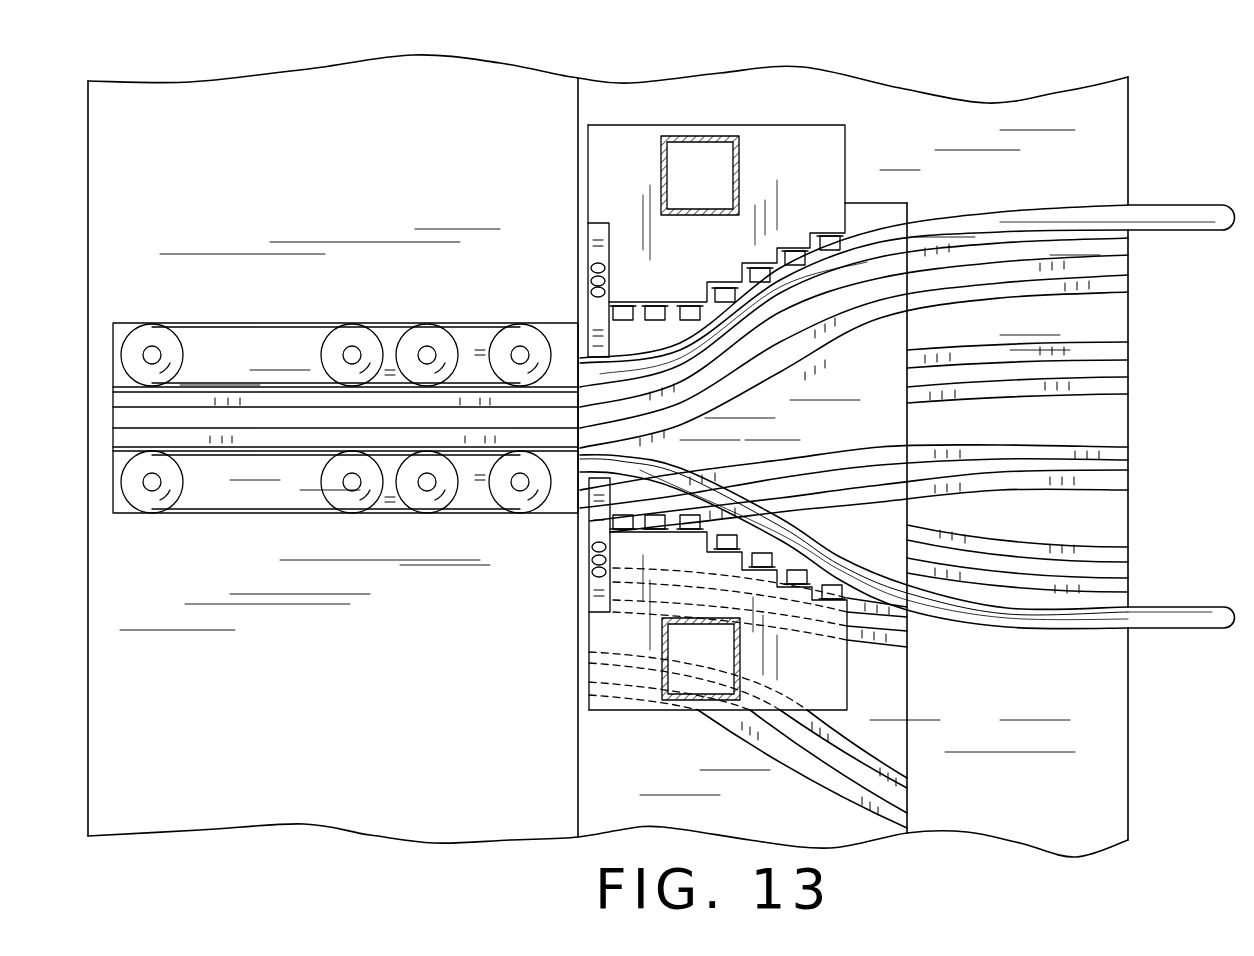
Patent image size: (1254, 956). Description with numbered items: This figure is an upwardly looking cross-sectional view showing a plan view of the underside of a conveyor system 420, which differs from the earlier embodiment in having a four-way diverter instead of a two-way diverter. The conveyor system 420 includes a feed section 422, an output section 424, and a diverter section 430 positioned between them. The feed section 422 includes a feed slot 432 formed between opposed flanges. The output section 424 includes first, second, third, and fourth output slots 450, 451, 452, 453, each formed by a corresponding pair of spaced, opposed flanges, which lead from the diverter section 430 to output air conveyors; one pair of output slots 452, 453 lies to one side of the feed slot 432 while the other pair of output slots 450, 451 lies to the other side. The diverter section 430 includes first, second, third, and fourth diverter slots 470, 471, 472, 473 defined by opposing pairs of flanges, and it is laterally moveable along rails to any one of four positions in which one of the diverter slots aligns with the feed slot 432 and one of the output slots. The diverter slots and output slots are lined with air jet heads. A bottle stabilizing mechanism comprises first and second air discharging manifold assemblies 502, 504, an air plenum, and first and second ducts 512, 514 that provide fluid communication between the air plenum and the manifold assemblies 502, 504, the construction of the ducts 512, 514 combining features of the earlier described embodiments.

The conveyor system 420 is at (645, 64).
The feed section 422 is at (517, 304).
The output section 424 is at (1160, 330).
The diverter section 430 is at (876, 356).
The feed slot 432 is at (276, 415).
The first output slot 450 is at (1104, 261).
The second output slot 451 is at (1104, 364).
The third output slot 452 is at (1104, 460).
The fourth output slot 453 is at (1104, 568).
The first diverter slot 470 is at (892, 295).
The second diverter slot 471 is at (870, 476).
The third diverter slot 472 is at (905, 622).
The fourth diverter slot 473 is at (886, 792).
The first air discharging manifold assembly 502 is at (692, 712).
The second air discharging manifold assembly 504 is at (799, 108).
The first duct 512 is at (745, 655).
The second duct 514 is at (745, 168).